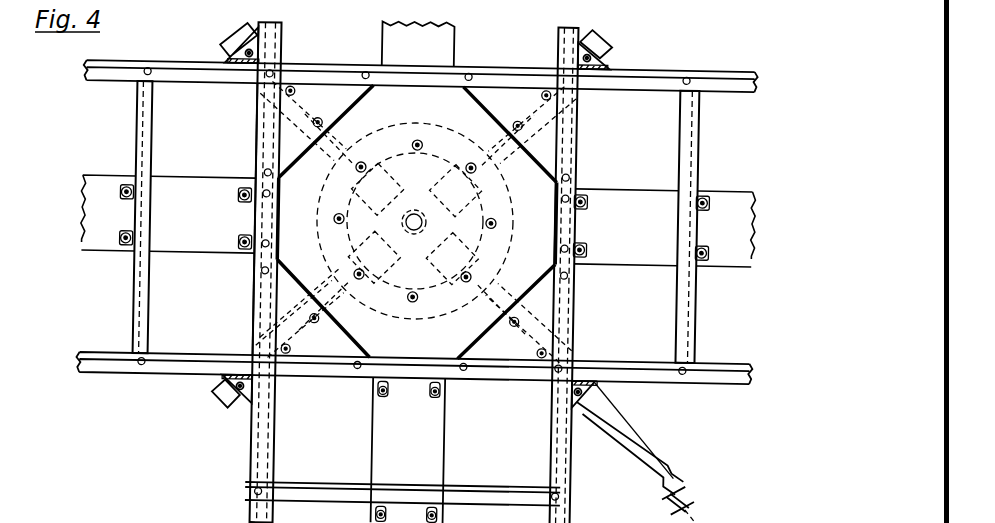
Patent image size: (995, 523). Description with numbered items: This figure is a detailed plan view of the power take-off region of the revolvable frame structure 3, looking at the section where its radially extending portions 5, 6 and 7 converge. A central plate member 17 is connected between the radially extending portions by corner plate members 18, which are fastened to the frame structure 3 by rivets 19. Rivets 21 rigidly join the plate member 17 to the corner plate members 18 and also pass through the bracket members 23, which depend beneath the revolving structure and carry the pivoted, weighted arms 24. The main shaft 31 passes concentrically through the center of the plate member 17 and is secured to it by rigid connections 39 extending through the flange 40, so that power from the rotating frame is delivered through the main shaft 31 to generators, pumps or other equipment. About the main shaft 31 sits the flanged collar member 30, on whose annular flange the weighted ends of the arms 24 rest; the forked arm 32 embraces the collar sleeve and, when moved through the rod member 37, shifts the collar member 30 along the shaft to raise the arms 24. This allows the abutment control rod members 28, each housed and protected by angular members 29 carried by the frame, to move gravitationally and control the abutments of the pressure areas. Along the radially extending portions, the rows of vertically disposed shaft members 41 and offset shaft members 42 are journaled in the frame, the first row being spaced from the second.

The frame structure 3 is at (190, 381).
The radially extending portion 5 is at (230, 27).
The radially extending portion 6 is at (644, 100).
The radially extending portion 7 is at (535, 471).
The plate member 17 is at (410, 103).
The corner plate members 18 is at (329, 89).
The rivets 19 is at (262, 80).
The rivets 21 is at (505, 112).
The bracket members 23 is at (254, 328).
The arms 24 is at (384, 268).
The abutment control rod members 28 is at (235, 54).
The angular members 29 is at (243, 95).
The collar member 30 is at (348, 250).
The main shaft 31 is at (427, 222).
The forked arm 32 is at (643, 453).
The rod member 37 is at (694, 486).
The rigid connections 39 is at (333, 221).
The flange 40 is at (322, 258).
The shaft members 41 is at (116, 257).
The shaft members 42 is at (122, 201).